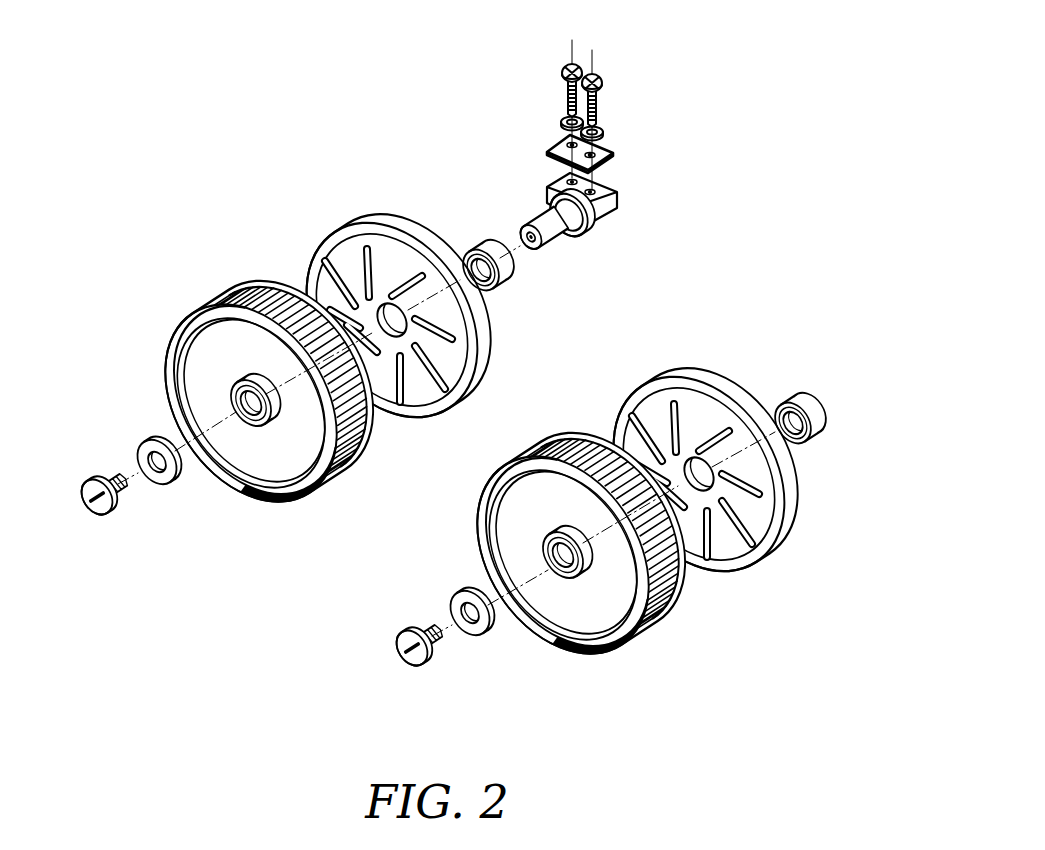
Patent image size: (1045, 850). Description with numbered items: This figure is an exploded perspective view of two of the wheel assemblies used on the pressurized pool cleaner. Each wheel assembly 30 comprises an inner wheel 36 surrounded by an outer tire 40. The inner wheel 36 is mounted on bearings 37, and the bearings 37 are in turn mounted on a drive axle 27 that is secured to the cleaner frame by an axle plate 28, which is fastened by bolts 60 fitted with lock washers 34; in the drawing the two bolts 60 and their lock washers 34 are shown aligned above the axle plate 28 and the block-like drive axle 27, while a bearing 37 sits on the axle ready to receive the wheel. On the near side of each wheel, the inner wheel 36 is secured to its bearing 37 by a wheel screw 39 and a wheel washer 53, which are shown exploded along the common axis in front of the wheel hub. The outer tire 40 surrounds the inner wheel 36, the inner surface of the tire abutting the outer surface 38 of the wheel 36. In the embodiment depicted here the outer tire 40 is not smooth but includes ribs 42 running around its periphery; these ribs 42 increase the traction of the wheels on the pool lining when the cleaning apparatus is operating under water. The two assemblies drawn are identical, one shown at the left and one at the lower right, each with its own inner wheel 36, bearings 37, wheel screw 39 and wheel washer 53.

The drive axle 27 is at (617, 194).
The axle plate 28 is at (613, 151).
The wheel assembly 30 is at (613, 667).
The lock washer 34 is at (562, 121).
The inner wheel 36 is at (486, 346).
The bearing 37 is at (480, 245).
The outer surface of wheel 38 is at (800, 498).
The wheel screw 39 is at (82, 486).
The outer tire 40 is at (376, 437).
The ribs 42 is at (683, 600).
The wheel washer 53 is at (143, 445).
The bolts 60 is at (598, 80).